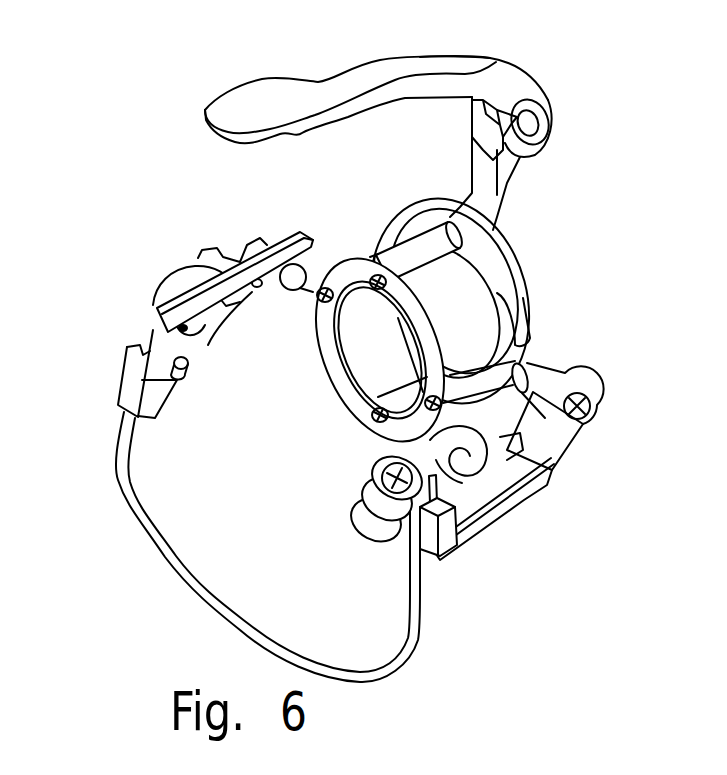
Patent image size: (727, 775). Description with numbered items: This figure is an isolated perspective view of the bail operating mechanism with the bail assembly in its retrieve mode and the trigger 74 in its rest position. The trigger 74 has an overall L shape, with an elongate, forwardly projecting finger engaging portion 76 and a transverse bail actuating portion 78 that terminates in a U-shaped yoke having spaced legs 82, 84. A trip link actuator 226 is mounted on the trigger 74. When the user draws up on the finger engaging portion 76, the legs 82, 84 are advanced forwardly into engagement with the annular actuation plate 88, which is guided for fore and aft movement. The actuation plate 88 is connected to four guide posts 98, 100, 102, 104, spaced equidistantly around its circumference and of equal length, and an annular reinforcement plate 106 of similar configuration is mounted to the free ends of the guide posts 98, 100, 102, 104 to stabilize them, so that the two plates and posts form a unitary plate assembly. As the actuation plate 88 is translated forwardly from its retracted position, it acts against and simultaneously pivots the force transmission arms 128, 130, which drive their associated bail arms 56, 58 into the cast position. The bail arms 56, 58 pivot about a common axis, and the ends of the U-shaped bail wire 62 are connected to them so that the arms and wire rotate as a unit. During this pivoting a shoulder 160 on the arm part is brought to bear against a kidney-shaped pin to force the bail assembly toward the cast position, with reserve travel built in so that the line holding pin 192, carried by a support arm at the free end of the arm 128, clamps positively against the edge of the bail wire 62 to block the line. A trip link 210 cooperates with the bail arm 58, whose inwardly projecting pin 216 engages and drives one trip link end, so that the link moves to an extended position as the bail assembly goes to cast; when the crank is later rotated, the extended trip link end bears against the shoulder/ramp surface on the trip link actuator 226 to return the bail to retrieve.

The bail arm 56 is at (540, 487).
The bail arm 58 is at (160, 350).
The bail wire 62 is at (130, 497).
The trigger 74 is at (437, 88).
The finger engaging portion 76 is at (318, 93).
The bail actuating portion 78 is at (475, 198).
The leg 82 is at (427, 210).
The leg 84 is at (517, 297).
The actuation plate 88 is at (480, 267).
The guide post 98 is at (480, 377).
The guide post 100 is at (436, 250).
The guide post 102 is at (382, 256).
The guide post 104 is at (403, 397).
The reinforcement plate 106 is at (340, 370).
The force transmission arm 128 is at (472, 527).
The force transmission arm 130 is at (303, 303).
The shoulder 160 is at (480, 457).
The line holding pin 192 is at (458, 540).
The trip link 210 is at (293, 230).
The pin 216 is at (173, 360).
The trip link actuator 226 is at (517, 153).